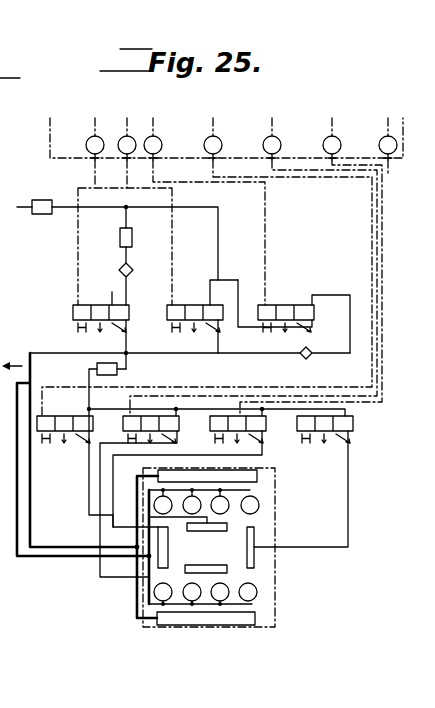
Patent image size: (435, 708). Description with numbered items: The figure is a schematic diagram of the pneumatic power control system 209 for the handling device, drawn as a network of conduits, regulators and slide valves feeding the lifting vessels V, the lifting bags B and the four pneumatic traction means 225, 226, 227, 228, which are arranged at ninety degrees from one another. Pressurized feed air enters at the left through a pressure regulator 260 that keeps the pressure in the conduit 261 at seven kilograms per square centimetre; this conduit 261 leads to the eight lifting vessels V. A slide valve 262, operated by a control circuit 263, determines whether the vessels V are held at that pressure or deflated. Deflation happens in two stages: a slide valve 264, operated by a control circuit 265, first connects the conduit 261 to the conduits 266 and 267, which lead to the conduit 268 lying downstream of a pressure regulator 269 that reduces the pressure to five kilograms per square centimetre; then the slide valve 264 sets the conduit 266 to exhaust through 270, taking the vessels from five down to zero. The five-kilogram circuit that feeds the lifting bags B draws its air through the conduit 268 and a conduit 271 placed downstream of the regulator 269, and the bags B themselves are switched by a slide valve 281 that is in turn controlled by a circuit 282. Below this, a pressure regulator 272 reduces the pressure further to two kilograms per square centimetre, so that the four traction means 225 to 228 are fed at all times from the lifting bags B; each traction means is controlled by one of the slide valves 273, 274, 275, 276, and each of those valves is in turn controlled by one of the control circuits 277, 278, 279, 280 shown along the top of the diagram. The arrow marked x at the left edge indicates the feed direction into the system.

The control system 209 is at (4, 44).
The pneumatic traction means 225 is at (252, 572).
The pneumatic traction means 226 is at (228, 527).
The pneumatic traction means 227 is at (170, 556).
The pneumatic traction means 228 is at (245, 540).
The pressure regulator 260 is at (42, 214).
The conduit 261 is at (220, 212).
The slide valve 262 is at (192, 305).
The control circuit 263 is at (124, 137).
The slide valve 264 is at (282, 305).
The control circuit 265 is at (158, 137).
The conduit 266 is at (280, 327).
The conduit 267 is at (325, 355).
The conduit 268 is at (180, 354).
The pressure regulator 269 is at (120, 238).
The exhaust 270 is at (305, 302).
The conduit 271 is at (132, 272).
The pressure regulator 272 is at (97, 365).
The slide valve 273 is at (124, 426).
The slide valve 274 is at (62, 431).
The slide valve 275 is at (232, 431).
The slide valve 276 is at (320, 431).
The control circuit 277 is at (275, 136).
The control circuit 278 is at (218, 136).
The control circuit 279 is at (334, 136).
The control circuit 280 is at (384, 136).
The slide valve 281 is at (98, 305).
The control circuit 282 is at (93, 172).
The lifting bags B is at (257, 471).
The lifting vessels V is at (258, 507).
The direction x is at (12, 359).